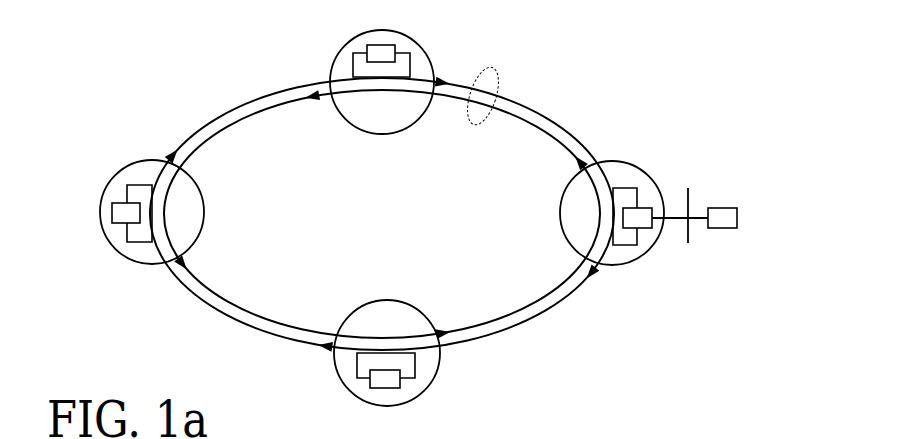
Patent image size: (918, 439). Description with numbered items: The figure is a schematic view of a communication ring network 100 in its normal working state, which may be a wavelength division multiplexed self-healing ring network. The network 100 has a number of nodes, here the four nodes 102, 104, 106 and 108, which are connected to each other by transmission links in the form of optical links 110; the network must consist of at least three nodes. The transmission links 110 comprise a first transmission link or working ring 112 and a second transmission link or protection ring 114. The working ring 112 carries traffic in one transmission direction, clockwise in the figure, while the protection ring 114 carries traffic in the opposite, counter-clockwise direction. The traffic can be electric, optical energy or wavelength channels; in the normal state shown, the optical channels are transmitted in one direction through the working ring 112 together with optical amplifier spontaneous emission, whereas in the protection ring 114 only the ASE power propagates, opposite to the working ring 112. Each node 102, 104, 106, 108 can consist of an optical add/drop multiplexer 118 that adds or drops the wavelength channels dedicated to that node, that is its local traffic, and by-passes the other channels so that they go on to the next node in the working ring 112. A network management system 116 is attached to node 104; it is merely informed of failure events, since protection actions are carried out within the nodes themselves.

The communication ring network 100 is at (608, 116).
The node 102 is at (382, 134).
The node 104 is at (562, 214).
The node 106 is at (387, 300).
The node 108 is at (204, 214).
The optical links 110 is at (502, 68).
The working ring 112 is at (538, 115).
The protection ring 114 is at (512, 311).
The network management system 116 is at (737, 218).
The optical add/drop multiplexer 118 is at (396, 45).